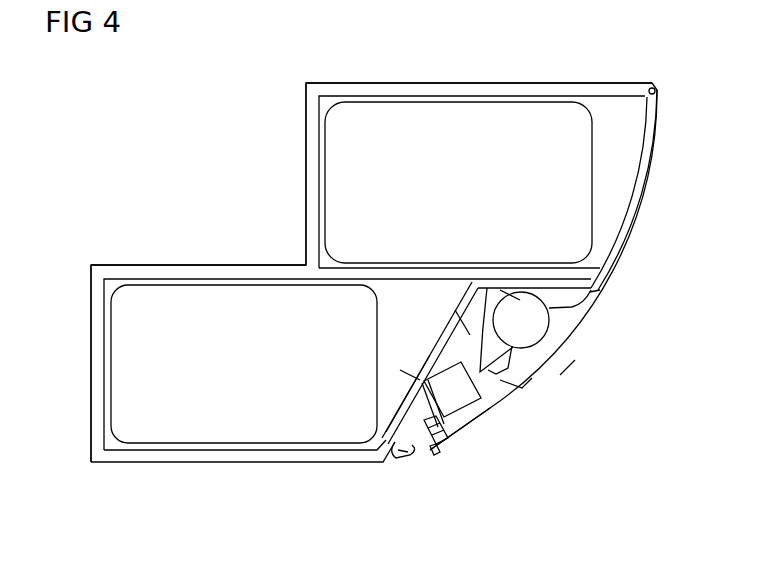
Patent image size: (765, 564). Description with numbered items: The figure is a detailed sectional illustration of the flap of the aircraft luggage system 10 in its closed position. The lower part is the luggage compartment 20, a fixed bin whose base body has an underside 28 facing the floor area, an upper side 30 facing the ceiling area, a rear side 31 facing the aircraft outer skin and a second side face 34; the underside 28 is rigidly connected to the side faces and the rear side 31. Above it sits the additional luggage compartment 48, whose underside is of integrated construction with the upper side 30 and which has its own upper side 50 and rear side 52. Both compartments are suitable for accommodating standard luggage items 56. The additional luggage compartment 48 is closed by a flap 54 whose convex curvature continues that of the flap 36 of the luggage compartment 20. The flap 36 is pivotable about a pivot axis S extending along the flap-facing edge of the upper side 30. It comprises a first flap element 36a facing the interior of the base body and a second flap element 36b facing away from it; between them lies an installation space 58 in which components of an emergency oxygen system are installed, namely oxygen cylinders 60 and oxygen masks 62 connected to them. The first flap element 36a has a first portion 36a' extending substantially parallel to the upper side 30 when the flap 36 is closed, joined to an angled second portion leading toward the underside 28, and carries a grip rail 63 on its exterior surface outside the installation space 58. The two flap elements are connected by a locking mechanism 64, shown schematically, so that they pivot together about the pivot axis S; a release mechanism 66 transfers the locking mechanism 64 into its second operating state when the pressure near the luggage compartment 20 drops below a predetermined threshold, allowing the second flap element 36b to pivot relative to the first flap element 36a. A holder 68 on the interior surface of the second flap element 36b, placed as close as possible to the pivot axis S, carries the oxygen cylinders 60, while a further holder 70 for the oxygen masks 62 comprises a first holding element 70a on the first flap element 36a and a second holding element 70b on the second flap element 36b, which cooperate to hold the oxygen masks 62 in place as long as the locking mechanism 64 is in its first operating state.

The aircraft luggage system 10 is at (664, 74).
The luggage compartment 20 is at (146, 278).
The underside 28 is at (240, 463).
The upper side 30 is at (186, 265).
The rear side 31 is at (90, 360).
The second side face 34 is at (92, 285).
The flap 36 is at (565, 373).
The first flap element 36a is at (433, 314).
The first portion 36a' is at (528, 256).
The second flap element 36b is at (505, 400).
The additional luggage compartment 48 is at (508, 92).
The upper side 50 is at (428, 80).
The rear side 52 is at (305, 130).
The flap 54 is at (652, 160).
The standard luggage items 56 is at (375, 117).
The installation space 58 is at (515, 382).
The oxygen cylinders 60 is at (540, 320).
The oxygen masks 62 is at (488, 428).
The grip rail 63 is at (410, 466).
The locking mechanism 64 is at (452, 450).
The release mechanism 66 is at (434, 458).
The holder 68 is at (560, 345).
The further holder 70 is at (441, 283).
The first holding element 70a is at (408, 412).
The second holding element 70b is at (488, 288).
The pivot axis S is at (598, 290).